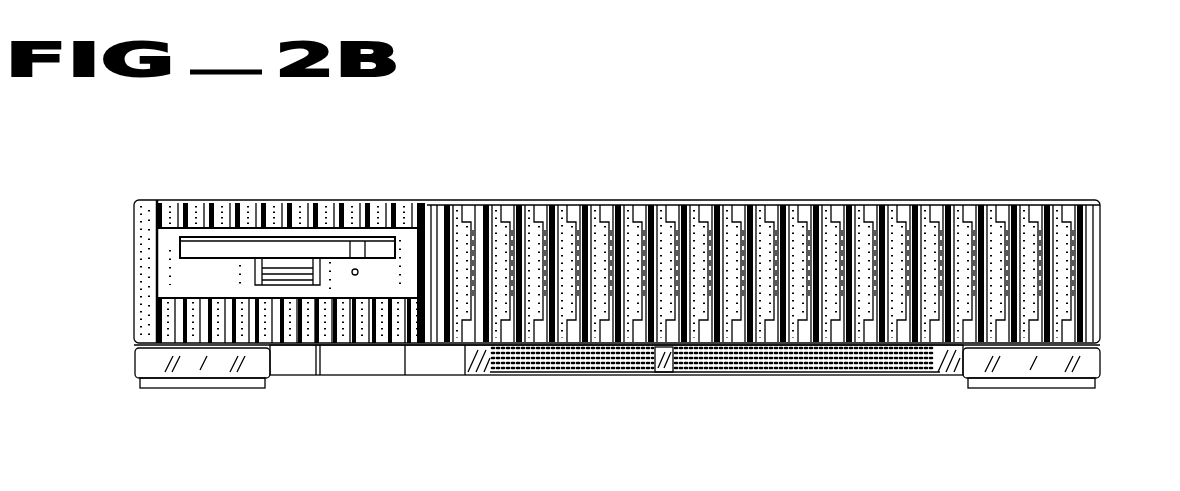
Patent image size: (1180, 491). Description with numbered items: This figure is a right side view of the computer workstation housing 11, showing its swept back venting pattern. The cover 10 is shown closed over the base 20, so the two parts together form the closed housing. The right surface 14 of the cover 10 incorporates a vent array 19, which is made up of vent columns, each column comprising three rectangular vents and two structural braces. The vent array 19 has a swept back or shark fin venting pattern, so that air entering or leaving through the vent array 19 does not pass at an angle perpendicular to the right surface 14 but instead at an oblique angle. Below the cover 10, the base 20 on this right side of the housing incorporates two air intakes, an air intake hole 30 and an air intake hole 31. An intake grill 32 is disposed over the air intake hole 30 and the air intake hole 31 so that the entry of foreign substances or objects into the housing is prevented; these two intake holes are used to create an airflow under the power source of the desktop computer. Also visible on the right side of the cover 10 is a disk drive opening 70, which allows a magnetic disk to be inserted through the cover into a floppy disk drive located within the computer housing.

The cover 10 is at (1103, 201).
The connector assembly 11 is at (121, 250).
The right surface 14 is at (565, 376).
The vent array 19 is at (455, 187).
The base 20 is at (1104, 352).
The air intake hole 30 is at (617, 378).
The air intake hole 31 is at (841, 378).
The intake grill 32 is at (694, 374).
The disk drive opening 70 is at (271, 253).